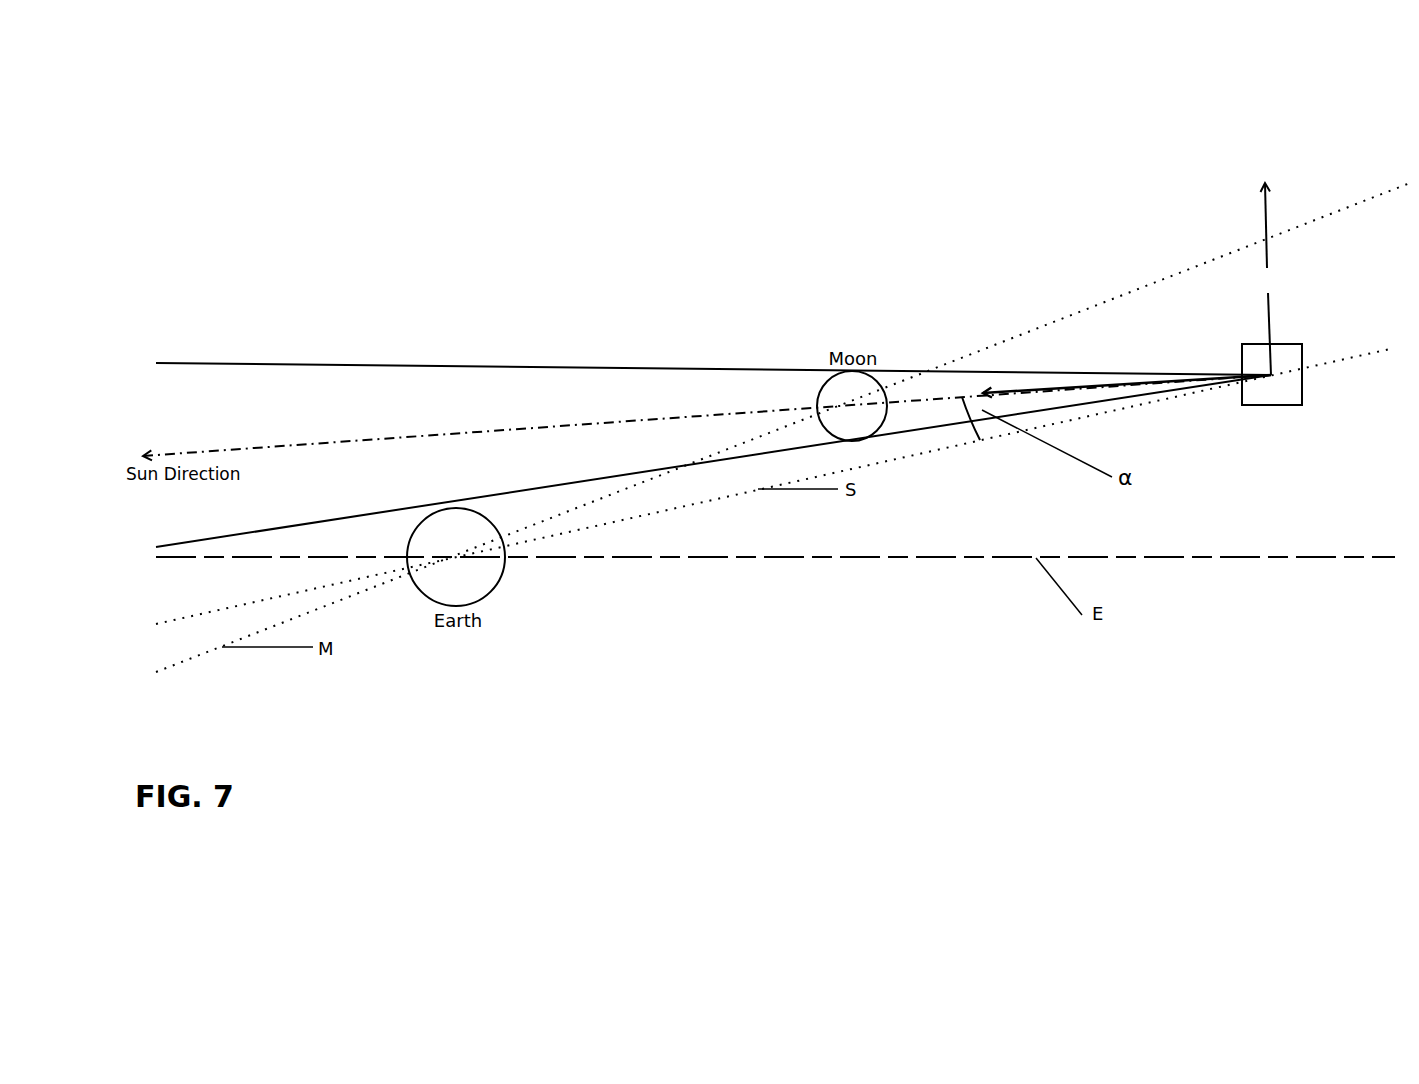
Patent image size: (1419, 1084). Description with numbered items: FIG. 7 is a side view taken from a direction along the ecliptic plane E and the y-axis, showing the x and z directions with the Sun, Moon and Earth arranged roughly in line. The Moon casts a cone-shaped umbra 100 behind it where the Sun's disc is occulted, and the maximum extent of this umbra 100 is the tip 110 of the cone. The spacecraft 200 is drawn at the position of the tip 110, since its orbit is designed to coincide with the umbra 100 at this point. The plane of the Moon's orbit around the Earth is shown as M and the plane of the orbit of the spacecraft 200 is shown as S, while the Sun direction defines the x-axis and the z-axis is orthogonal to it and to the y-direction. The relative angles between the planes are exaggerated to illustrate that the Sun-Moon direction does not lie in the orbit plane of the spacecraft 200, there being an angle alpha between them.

The umbra 100 is at (940, 385).
The tip 110 is at (1271, 375).
The spacecraft 200 is at (1302, 344).